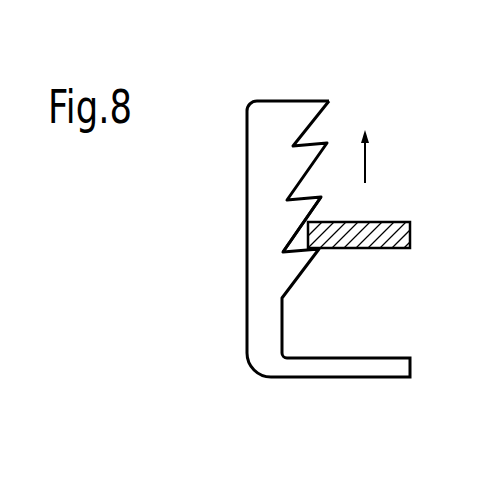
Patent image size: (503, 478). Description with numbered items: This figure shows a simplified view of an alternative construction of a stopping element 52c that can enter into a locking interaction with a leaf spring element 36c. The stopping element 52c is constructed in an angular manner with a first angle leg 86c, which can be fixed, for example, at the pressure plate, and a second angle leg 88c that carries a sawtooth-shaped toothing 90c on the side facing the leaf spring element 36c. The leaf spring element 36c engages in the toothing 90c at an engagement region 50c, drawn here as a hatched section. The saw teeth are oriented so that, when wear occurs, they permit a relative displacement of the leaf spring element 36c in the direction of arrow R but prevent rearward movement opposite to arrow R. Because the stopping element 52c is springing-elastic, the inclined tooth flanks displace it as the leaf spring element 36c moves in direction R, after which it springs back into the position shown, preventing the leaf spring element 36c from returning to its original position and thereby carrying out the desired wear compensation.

The second angle leg 88c is at (265, 100).
The sawtooth-shaped toothing 90c is at (331, 128).
The engagement point 50c is at (310, 234).
The stopping element 52c is at (247, 277).
The leaf spring element 36c is at (410, 222).
The first angle leg 86c is at (387, 378).
The arrow R is at (365, 158).